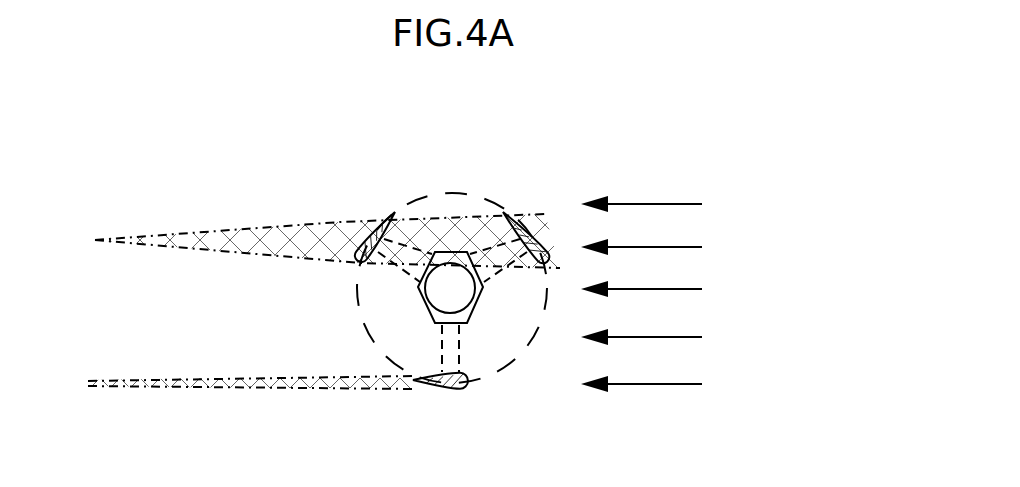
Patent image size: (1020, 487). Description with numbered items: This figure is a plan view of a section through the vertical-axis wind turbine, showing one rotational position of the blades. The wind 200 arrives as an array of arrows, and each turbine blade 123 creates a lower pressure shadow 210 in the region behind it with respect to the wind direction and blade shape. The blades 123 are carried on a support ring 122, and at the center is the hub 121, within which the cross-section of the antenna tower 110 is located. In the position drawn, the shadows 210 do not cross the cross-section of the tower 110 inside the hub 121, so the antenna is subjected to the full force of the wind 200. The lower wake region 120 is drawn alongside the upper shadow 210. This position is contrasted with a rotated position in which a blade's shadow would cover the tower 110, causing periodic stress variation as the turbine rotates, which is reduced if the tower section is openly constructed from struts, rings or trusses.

The tower 110 is at (487, 323).
The lower wake region 120 is at (252, 423).
The hub 121 is at (422, 298).
The support ring 122 is at (420, 182).
The turbine blade 123 is at (445, 397).
The wind 200 is at (675, 294).
The shadow 210 is at (242, 205).